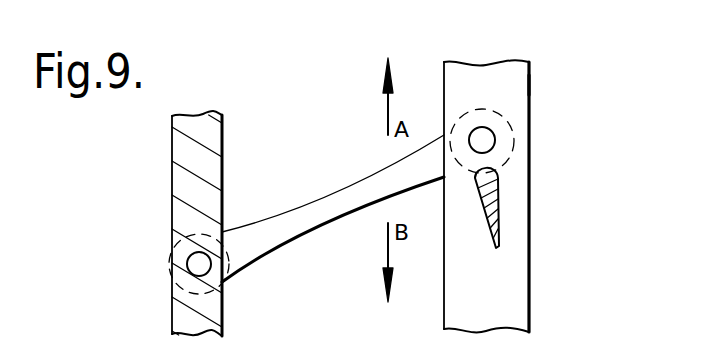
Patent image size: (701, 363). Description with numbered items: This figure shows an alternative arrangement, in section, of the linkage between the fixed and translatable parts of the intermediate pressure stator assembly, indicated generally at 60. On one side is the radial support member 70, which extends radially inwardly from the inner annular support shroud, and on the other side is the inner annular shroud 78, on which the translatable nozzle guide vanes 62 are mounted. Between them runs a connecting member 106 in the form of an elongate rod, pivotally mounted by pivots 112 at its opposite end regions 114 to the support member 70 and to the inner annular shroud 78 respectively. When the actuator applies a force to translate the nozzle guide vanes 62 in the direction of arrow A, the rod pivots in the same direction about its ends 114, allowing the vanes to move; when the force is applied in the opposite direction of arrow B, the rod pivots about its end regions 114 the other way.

The connector body 60 is at (521, 88).
The translatable nozzle guide vanes 62 is at (500, 188).
The radial support member 70 is at (190, 178).
The inner annular shroud 78 is at (517, 236).
The connecting members 106 is at (301, 221).
The pivots 112 is at (188, 263).
The end regions 114 is at (175, 312).